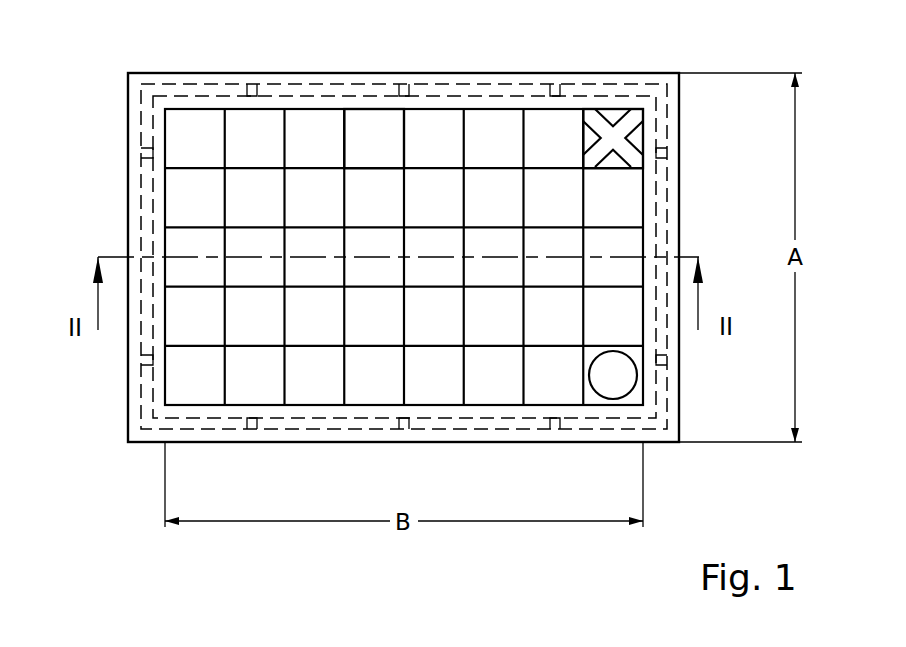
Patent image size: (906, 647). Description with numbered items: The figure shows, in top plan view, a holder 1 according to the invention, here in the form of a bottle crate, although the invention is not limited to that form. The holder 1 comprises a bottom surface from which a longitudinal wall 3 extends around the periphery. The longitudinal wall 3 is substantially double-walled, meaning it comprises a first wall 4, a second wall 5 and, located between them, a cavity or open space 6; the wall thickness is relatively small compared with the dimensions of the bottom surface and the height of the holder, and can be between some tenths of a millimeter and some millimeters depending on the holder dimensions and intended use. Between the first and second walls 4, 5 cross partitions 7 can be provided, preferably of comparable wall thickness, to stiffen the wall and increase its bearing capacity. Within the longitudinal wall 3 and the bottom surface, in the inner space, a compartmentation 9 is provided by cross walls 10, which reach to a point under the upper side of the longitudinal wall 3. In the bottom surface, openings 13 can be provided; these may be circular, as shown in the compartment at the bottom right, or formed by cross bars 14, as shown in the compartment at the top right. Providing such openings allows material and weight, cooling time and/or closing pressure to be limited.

The holder 1 is at (66, 464).
The longitudinal wall 3 is at (498, 434).
The first wall 4 is at (159, 138).
The second wall 5 is at (139, 175).
The cavity or open space 6 is at (151, 213).
The cross partitions 7 is at (660, 363).
The compartmentation 9 is at (362, 138).
The cross walls 10 is at (223, 133).
The openings 13 is at (634, 137).
The cross bars 14 is at (597, 121).